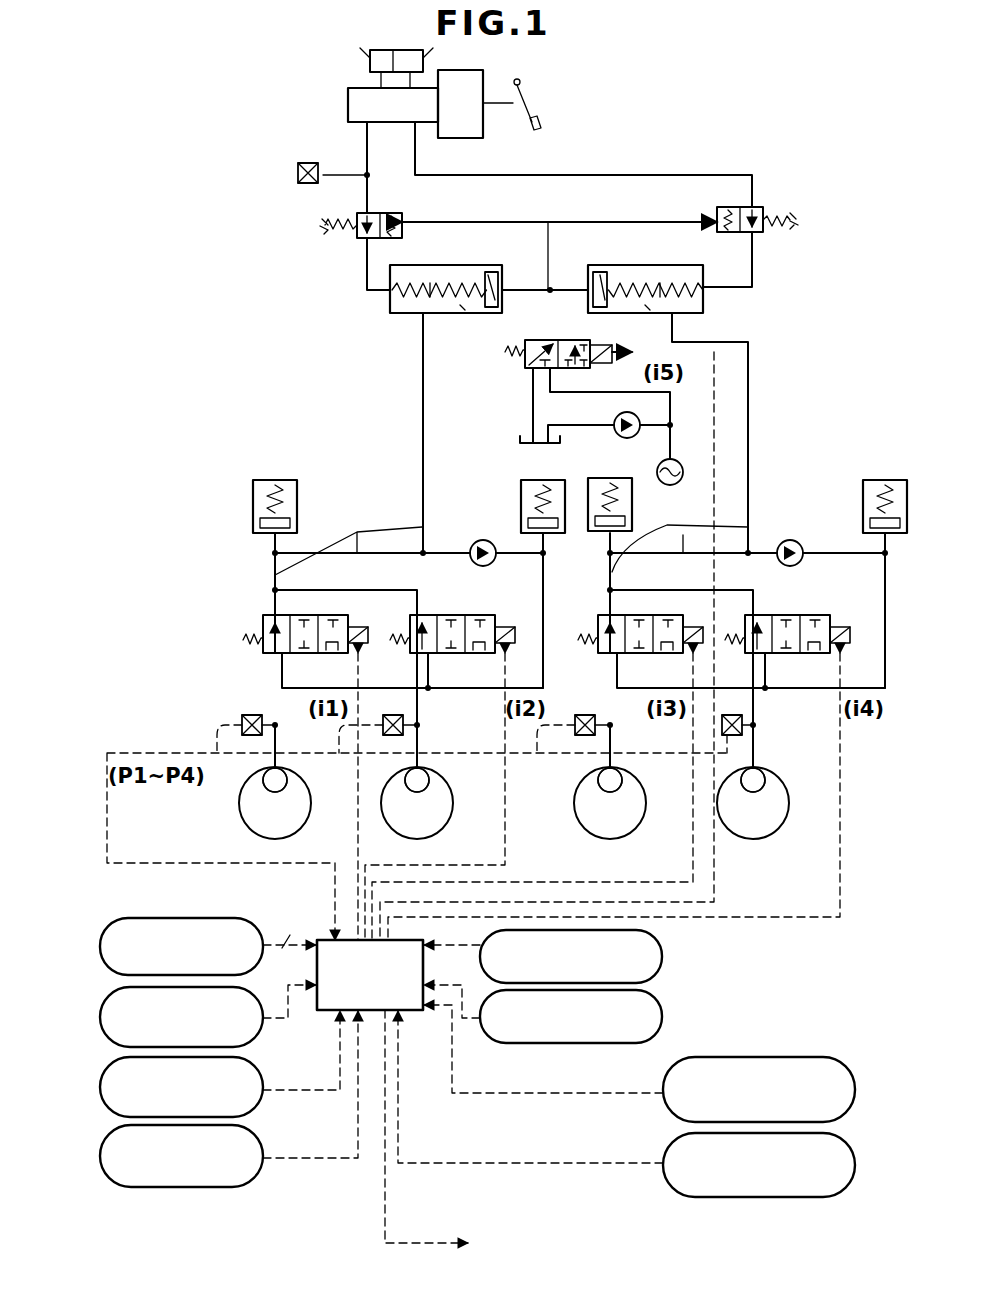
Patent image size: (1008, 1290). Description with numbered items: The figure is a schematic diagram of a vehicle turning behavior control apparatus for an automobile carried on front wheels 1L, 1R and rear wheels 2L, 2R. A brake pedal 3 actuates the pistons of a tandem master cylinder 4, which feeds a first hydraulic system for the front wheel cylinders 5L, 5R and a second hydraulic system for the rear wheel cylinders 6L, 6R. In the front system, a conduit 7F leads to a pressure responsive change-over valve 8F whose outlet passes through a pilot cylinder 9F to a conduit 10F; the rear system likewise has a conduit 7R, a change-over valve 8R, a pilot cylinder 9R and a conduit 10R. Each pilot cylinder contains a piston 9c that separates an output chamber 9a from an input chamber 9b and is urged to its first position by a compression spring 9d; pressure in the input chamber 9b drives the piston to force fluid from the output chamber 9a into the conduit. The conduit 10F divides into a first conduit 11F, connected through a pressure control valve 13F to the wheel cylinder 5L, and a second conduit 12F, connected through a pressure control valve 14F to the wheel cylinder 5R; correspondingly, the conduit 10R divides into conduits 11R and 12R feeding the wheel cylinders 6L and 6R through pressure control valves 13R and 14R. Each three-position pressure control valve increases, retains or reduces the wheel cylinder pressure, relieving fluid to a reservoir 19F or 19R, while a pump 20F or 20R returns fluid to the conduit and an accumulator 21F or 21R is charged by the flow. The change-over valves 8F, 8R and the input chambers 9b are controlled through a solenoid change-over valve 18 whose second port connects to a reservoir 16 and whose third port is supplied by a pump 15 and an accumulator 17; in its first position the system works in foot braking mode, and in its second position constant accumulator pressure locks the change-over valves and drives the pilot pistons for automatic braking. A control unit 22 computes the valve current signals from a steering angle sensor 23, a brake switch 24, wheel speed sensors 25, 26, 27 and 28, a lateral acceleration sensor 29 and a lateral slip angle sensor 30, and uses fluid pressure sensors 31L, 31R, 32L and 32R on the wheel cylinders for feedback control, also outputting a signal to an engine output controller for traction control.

The brake pedal 3 is at (545, 122).
The tandem master cylinder 4 is at (348, 97).
The conduit 7F is at (370, 153).
The conduit 7R is at (420, 163).
The pressure responsive change-over valve 8F is at (358, 240).
The pressure responsive change-over valve 8R is at (760, 235).
The pilot cylinder 9F is at (398, 315).
The pilot cylinder 9R is at (703, 310).
The output chamber 9a is at (645, 305).
The input chamber 9b is at (595, 278).
The piston 9c is at (612, 276).
The compression spring 9d is at (660, 290).
The solenoid change-over valve 18 is at (525, 368).
The reservoir 16 is at (520, 443).
The pump 15 is at (622, 437).
The accumulator 17 is at (660, 481).
The accumulator 21F is at (278, 480).
The reservoir 19F is at (521, 492).
The accumulator 21R is at (590, 515).
The reservoir 19R is at (885, 480).
The pump 20F is at (493, 532).
The pump 20R is at (795, 540).
The conduit 10F is at (348, 543).
The conduit 10R is at (680, 544).
The first conduit 11F is at (273, 608).
The first conduit 11R is at (608, 604).
The second conduit 12F is at (352, 596).
The second conduit 12R is at (725, 596).
The pressure control valve 13F is at (262, 655).
The pressure control valve 13R is at (618, 621).
The pressure control valve 14F is at (455, 612).
The pressure control valve 14R is at (803, 613).
The fluid pressure sensor 31L is at (229, 730).
The fluid pressure sensor 31R is at (403, 720).
The fluid pressure sensor 32L is at (583, 715).
The fluid pressure sensor 32R is at (742, 721).
The front wheel 1L is at (248, 828).
The front wheel 1R is at (392, 822).
The rear wheel 2L is at (593, 833).
The rear wheel 2R is at (748, 838).
The wheel cylinder 5L is at (262, 773).
The wheel cylinder 5R is at (430, 780).
The wheel cylinder 6L is at (596, 780).
The wheel cylinder 6R is at (767, 775).
The control unit 22 is at (408, 1011).
The steering angle sensor 23 is at (662, 955).
The brake switch 24 is at (672, 993).
The wheel speed sensor 25 is at (100, 945).
The wheel speed sensor 26 is at (100, 1010).
The wheel speed sensor 27 is at (100, 1082).
The wheel speed sensor 28 is at (100, 1150).
The lateral acceleration sensor 29 is at (855, 1078).
The lateral slip angle sensor 30 is at (855, 1158).